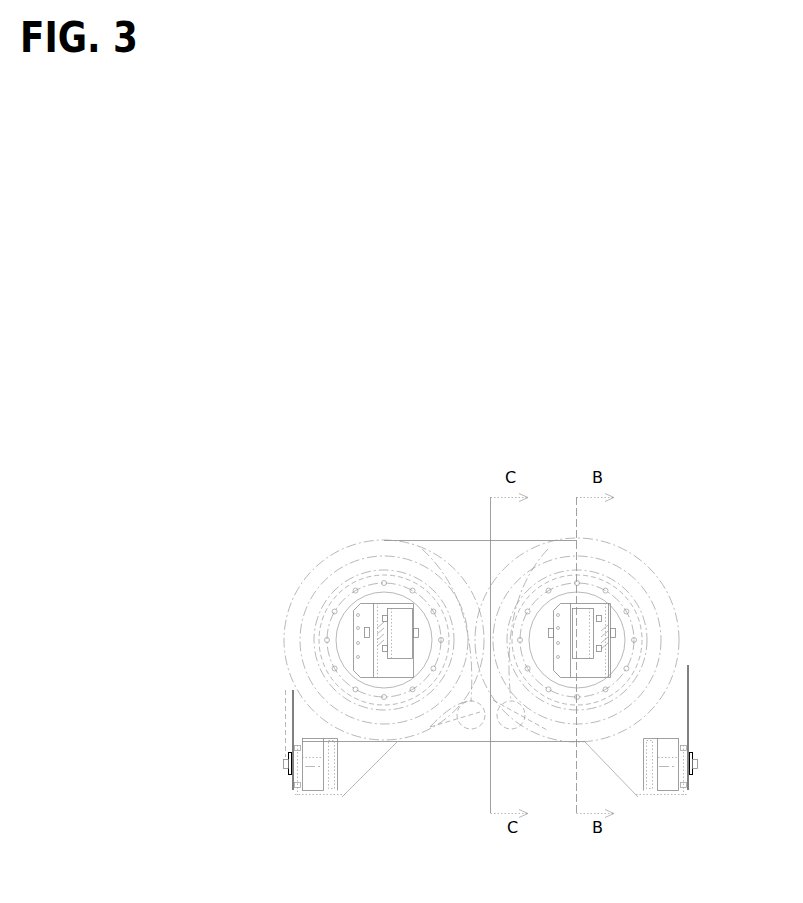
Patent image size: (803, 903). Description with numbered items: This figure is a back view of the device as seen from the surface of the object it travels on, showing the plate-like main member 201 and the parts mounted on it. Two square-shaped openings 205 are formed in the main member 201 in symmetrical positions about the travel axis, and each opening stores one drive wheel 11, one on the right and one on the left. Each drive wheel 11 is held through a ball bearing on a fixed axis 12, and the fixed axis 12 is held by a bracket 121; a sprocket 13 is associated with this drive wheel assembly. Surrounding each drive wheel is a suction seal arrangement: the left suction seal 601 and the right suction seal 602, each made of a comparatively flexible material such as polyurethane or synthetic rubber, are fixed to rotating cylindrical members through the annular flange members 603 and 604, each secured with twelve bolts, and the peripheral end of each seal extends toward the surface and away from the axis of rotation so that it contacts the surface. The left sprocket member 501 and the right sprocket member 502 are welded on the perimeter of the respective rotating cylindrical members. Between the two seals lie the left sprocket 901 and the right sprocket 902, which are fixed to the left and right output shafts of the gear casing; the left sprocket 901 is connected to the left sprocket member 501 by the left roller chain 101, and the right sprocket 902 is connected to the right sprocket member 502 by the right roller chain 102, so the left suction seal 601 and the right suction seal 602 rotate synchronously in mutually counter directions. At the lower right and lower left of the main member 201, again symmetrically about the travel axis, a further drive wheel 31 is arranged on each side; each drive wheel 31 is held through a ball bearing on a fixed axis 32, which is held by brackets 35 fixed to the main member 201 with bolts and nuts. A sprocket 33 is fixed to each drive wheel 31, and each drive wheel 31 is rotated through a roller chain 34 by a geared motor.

The drive wheel 11 is at (396, 613).
The fixed axis 12 is at (402, 612).
The sprocket 13 is at (378, 614).
The bracket 121 is at (358, 641).
The square-shaped opening 205 is at (386, 668).
The main member 201 is at (689, 690).
The left suction seal 601 is at (515, 585).
The right suction seal 602 is at (310, 586).
The left sprocket member 501 is at (637, 576).
The right sprocket member 502 is at (345, 578).
The annular flange member 603 is at (628, 613).
The annular flange member 604 is at (333, 608).
The left roller chain 101 is at (545, 735).
The right roller chain 102 is at (437, 728).
The left sprocket 901 is at (510, 729).
The right sprocket 902 is at (476, 735).
The drive wheel 31 is at (316, 792).
The fixed axis 32 is at (303, 792).
The sprocket 33 is at (290, 760).
The roller chain 34 is at (292, 712).
The bracket 35 is at (325, 762).